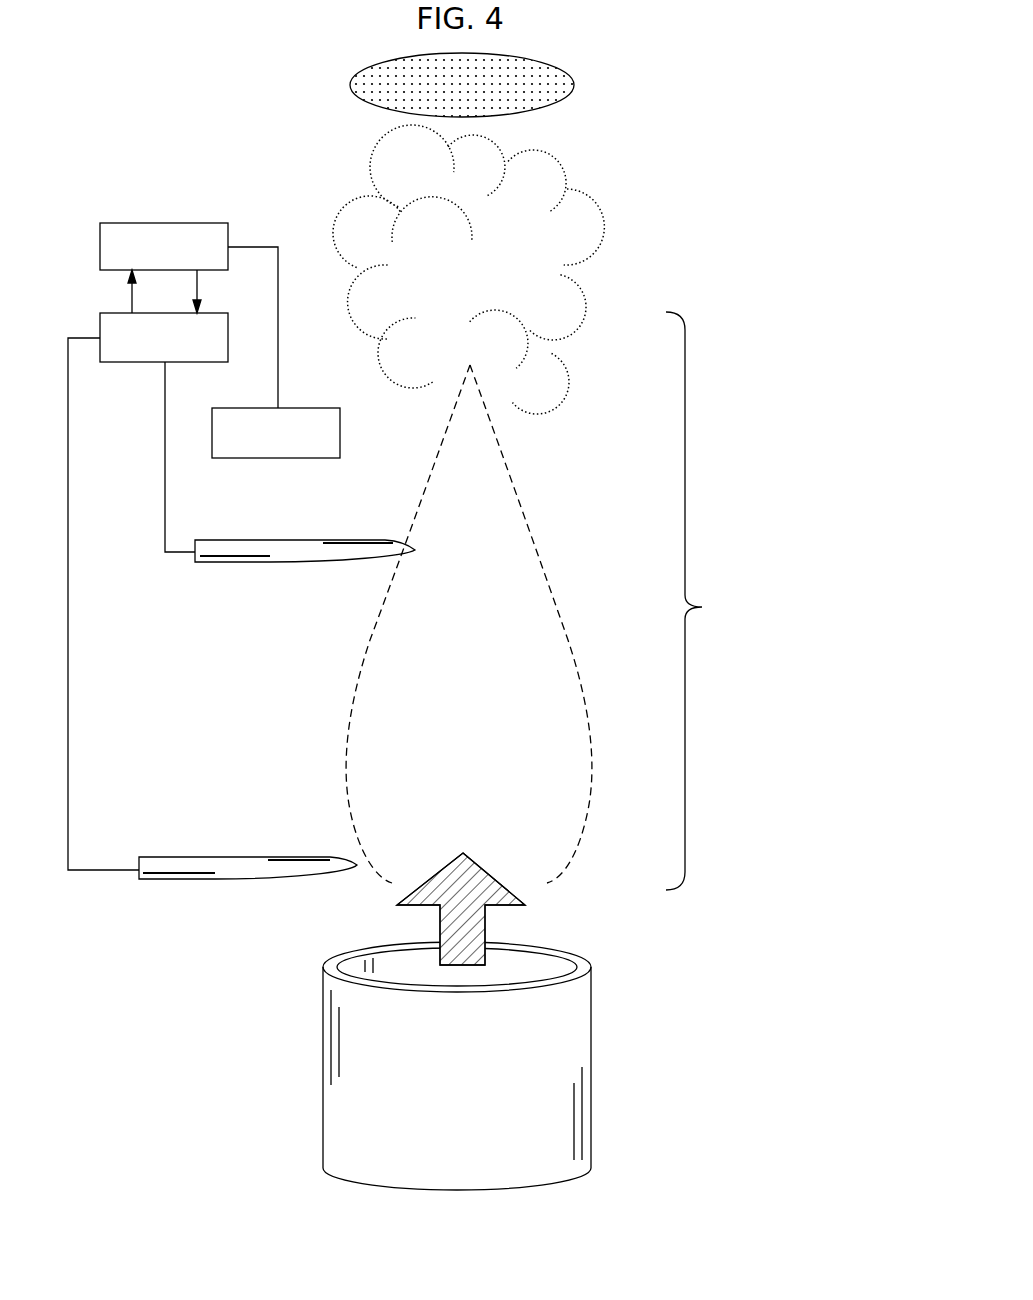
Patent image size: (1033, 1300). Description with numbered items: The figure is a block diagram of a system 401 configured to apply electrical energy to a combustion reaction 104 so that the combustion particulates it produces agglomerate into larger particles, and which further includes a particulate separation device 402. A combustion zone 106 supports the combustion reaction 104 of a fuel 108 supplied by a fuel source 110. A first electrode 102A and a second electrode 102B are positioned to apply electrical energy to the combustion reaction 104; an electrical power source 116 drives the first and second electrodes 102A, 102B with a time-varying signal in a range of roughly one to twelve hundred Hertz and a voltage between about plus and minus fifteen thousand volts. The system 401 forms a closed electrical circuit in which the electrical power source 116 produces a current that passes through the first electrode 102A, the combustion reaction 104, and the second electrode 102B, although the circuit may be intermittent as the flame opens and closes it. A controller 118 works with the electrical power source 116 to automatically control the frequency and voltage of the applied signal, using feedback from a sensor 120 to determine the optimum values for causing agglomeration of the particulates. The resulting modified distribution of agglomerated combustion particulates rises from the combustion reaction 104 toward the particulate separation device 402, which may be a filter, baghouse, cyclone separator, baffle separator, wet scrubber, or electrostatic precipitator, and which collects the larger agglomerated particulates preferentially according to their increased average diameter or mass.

The system 401 is at (660, 104).
The particulate separation device 402 is at (348, 85).
The combustion reaction 104 is at (469, 624).
The combustion zone 106 is at (711, 601).
The fuel 108 is at (525, 902).
The fuel source 110 is at (590, 1050).
The electrical power source 116 is at (110, 363).
The controller 118 is at (106, 222).
The sensor 120 is at (223, 460).
The first electrode 102A is at (248, 562).
The second electrode 102B is at (193, 880).